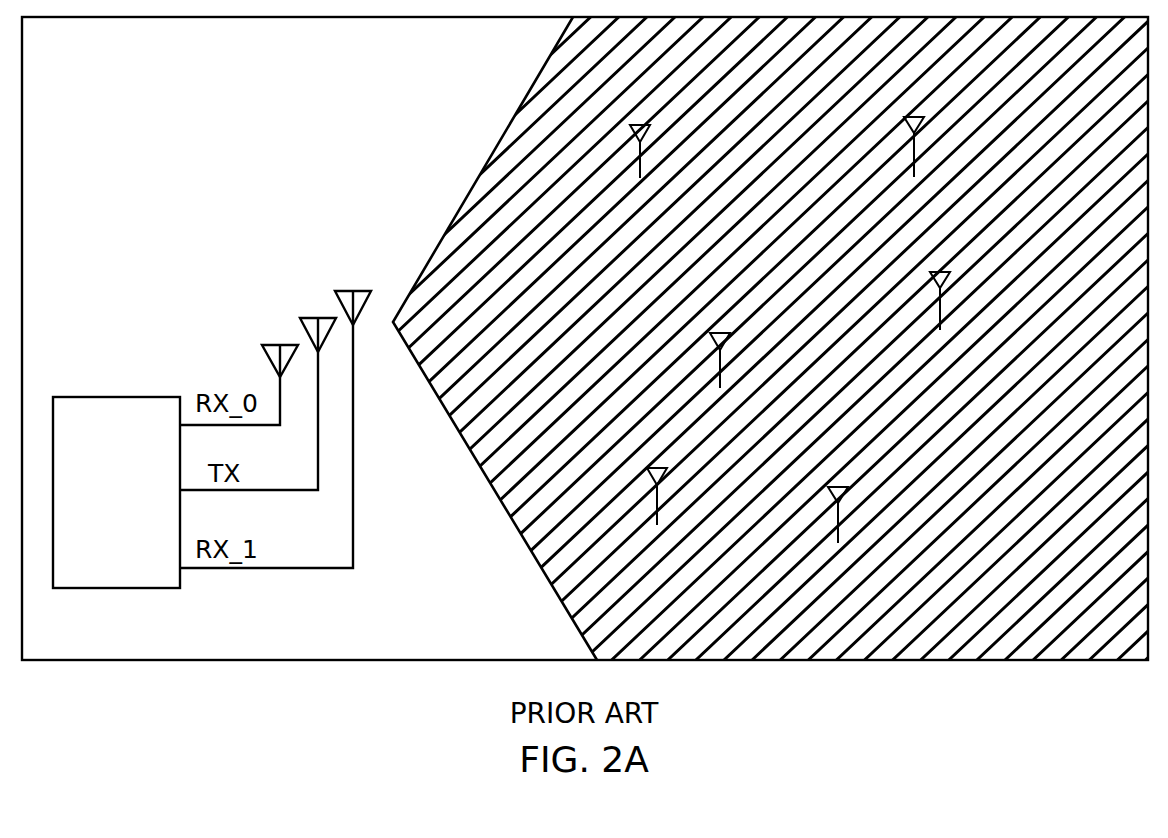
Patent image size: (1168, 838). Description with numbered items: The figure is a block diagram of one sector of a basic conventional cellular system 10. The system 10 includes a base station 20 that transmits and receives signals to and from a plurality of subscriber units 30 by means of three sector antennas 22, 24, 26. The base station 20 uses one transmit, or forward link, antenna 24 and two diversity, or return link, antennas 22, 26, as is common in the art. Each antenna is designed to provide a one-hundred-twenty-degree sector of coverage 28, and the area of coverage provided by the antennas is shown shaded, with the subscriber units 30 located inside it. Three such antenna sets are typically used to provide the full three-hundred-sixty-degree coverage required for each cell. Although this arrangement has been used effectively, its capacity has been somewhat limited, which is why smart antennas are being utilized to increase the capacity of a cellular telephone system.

The system 10 is at (372, 160).
The base station 20 is at (112, 397).
The diversity antenna 22 is at (272, 345).
The transmit antenna 24 is at (310, 318).
The diversity antenna 26 is at (352, 291).
The sector of coverage 28 is at (478, 462).
The subscriber units 30 is at (653, 207).